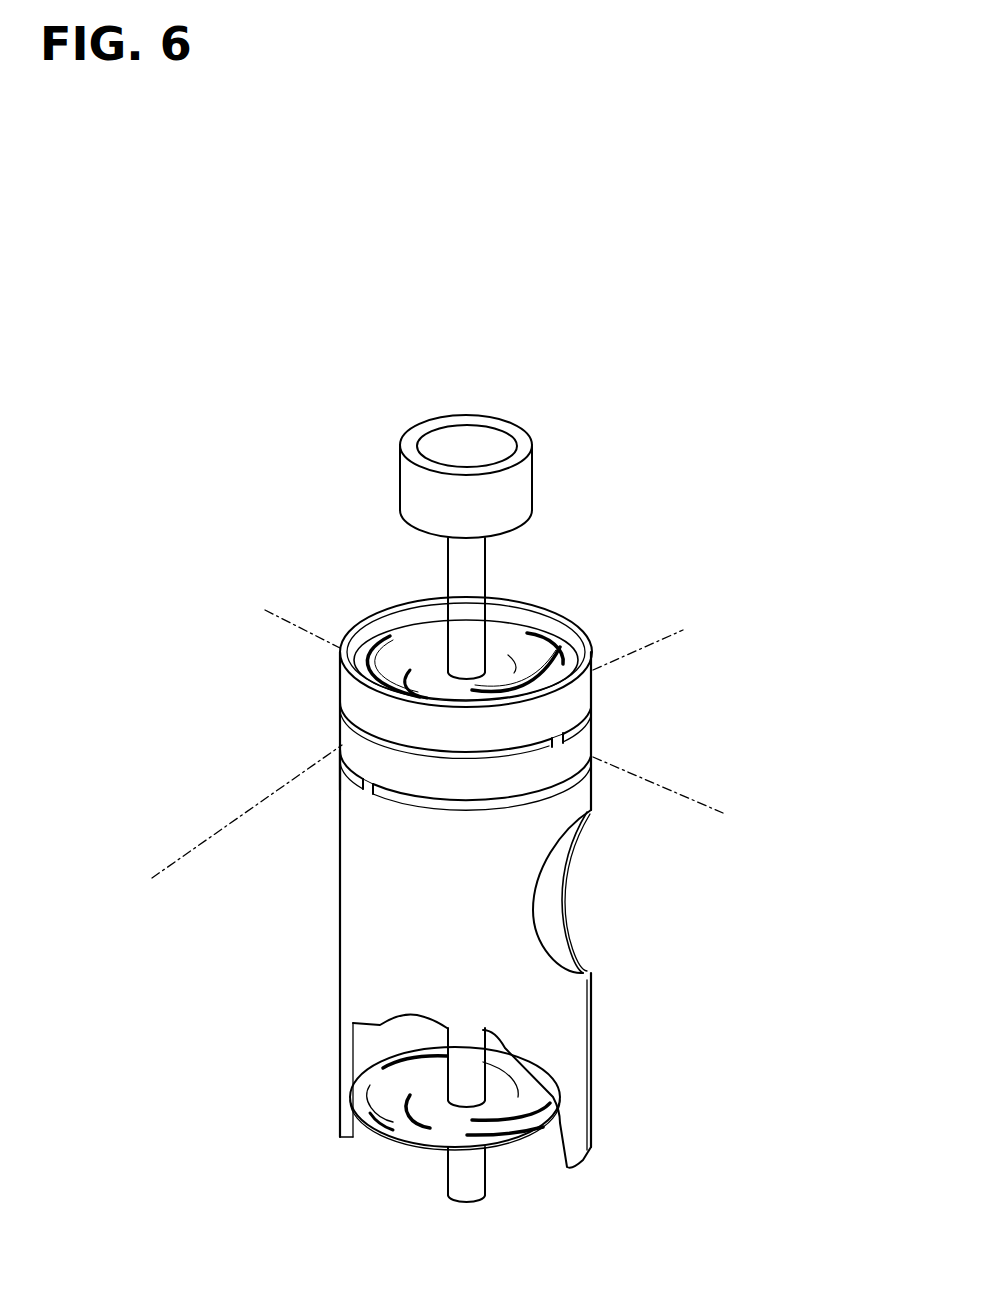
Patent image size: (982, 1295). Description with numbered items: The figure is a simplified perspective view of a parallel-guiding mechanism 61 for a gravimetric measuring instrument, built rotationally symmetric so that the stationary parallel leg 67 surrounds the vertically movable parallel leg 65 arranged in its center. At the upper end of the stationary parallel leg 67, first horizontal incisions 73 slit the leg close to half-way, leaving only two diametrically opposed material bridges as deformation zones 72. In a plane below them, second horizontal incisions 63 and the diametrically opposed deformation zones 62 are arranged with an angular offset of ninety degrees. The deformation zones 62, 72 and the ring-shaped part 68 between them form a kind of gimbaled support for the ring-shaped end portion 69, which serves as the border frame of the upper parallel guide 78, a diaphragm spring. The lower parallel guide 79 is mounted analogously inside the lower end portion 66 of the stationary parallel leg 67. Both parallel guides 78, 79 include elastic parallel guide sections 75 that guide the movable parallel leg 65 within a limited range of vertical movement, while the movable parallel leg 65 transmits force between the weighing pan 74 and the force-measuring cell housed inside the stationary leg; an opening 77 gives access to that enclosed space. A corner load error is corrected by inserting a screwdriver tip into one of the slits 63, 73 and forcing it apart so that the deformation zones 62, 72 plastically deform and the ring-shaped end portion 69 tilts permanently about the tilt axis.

The parallel-guiding mechanism 61 is at (305, 498).
The deformation zones 62 is at (360, 770).
The second horizontal incisions 63 is at (371, 780).
The movable parallel leg 65 is at (468, 566).
The lower end portion 66 is at (585, 1124).
The stationary parallel leg 67 is at (400, 962).
The ring-shaped part 68 is at (345, 740).
The ring-shaped end portion 69 is at (373, 703).
The deformation zones 72 is at (592, 757).
The first horizontal incisions 73 is at (505, 753).
The weighing pan 74 is at (505, 493).
The elastic parallel guide sections 75 is at (532, 662).
The opening 77 is at (548, 908).
The upper parallel guide 78 is at (430, 673).
The lower parallel guide 79 is at (368, 1083).